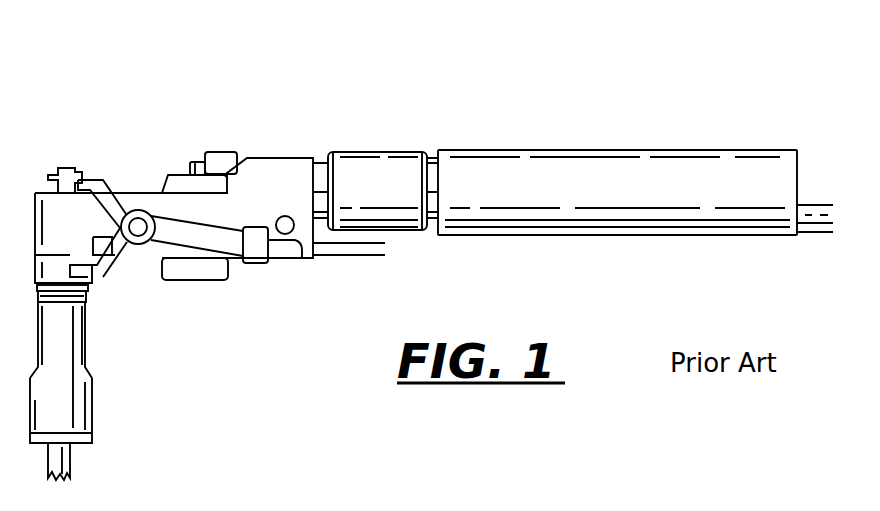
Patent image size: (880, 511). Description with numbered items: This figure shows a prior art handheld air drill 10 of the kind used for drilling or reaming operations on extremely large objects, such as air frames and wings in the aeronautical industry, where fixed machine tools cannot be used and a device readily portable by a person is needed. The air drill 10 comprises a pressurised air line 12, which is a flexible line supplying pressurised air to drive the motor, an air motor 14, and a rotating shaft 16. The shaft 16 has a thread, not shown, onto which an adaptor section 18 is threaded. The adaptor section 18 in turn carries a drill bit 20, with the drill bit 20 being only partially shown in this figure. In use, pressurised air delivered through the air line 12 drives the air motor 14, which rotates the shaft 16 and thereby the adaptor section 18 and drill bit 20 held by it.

The air drill 10 is at (433, 118).
The pressurised air line 12 is at (810, 217).
The air motor 14 is at (590, 172).
The rotating shaft 16 is at (85, 338).
The adaptor section 18 is at (85, 440).
The drill bit 20 is at (62, 460).